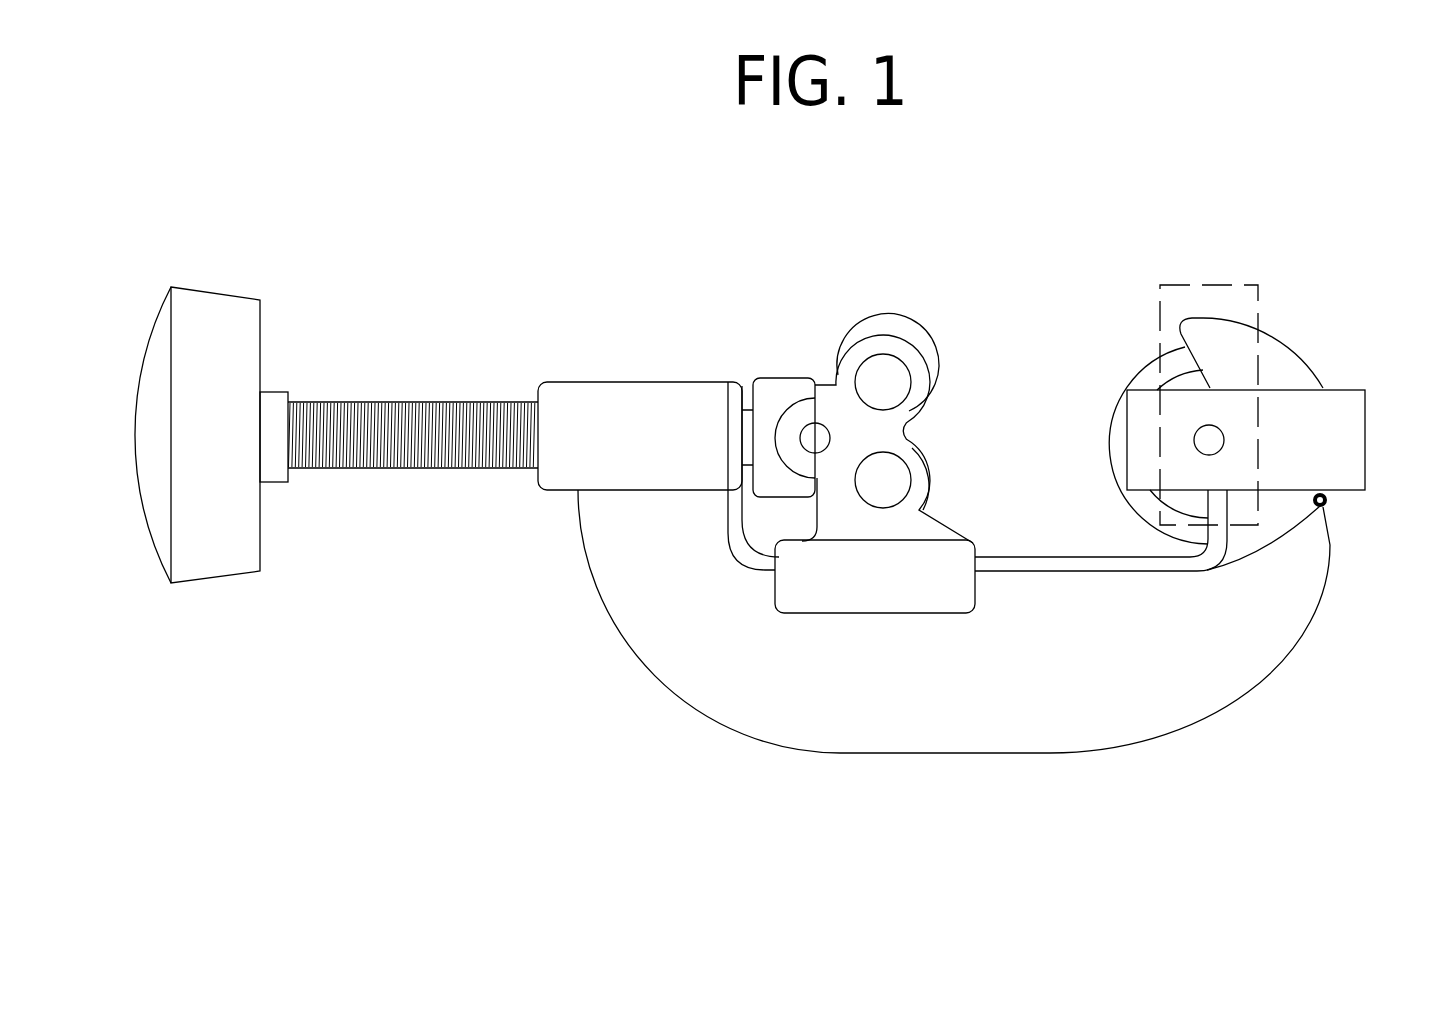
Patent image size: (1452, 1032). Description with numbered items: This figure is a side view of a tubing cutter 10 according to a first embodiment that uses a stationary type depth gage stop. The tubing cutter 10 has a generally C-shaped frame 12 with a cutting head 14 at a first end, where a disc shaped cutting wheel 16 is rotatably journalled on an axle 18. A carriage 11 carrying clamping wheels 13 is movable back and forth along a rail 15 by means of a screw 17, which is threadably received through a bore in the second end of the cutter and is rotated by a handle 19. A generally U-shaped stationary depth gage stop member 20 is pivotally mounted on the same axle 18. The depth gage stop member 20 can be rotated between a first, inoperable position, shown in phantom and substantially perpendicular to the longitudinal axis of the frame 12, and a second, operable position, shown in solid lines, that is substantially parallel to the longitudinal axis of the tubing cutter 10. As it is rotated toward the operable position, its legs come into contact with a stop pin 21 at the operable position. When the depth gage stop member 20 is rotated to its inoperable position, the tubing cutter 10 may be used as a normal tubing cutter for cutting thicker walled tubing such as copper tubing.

The tubing cutter 10 is at (492, 632).
The carriage 11 is at (780, 375).
The C-shaped frame 12 is at (974, 762).
The clamping wheels 13 is at (935, 387).
The cutting head 14 is at (1297, 340).
The rail 15 is at (1004, 555).
The cutting wheel 16 is at (1128, 366).
The screw 17 is at (320, 401).
The axle 18 is at (1199, 420).
The handle 19 is at (189, 281).
The depth gage stop member 20 is at (1367, 386).
The pivot pin 21 is at (1327, 512).